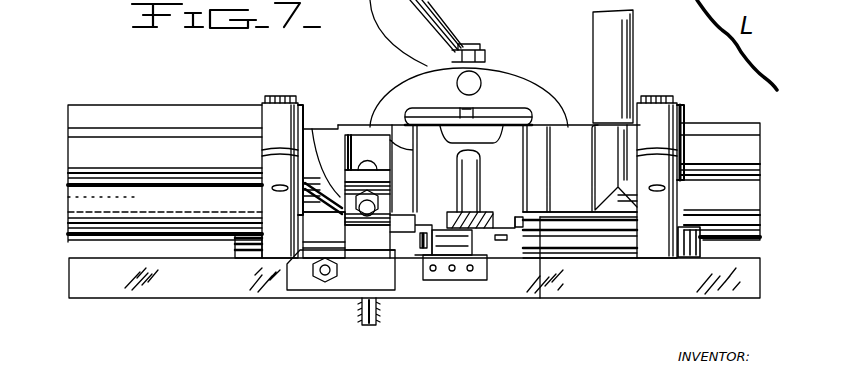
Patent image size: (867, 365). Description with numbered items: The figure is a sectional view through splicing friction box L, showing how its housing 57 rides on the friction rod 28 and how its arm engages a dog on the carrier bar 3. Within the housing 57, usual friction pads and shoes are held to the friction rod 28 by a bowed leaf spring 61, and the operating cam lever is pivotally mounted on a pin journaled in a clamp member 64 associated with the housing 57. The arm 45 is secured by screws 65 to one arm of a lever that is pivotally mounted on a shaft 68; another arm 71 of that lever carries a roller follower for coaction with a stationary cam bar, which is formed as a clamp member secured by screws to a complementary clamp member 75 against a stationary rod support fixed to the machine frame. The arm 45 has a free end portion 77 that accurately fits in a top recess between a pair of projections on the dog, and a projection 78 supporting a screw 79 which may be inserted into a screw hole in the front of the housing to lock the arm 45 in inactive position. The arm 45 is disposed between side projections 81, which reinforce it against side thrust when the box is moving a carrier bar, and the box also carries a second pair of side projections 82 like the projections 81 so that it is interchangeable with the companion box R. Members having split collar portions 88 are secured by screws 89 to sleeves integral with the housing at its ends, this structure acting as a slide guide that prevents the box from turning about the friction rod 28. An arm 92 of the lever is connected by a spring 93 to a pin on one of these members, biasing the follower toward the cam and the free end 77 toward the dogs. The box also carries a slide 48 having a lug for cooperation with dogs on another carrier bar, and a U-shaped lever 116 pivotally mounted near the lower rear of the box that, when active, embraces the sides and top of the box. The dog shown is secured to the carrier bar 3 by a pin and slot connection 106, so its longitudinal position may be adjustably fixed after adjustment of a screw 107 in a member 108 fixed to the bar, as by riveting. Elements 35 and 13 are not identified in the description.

The complementary clamp member 75 is at (100, 110).
The guide strip 35 is at (83, 197).
The friction rod 28 is at (725, 133).
The housing 57 is at (540, 298).
The carrier bar 3 is at (148, 290).
The screws 89 is at (268, 100).
The split collar portions 88 is at (680, 112).
The lever 116 is at (622, 66).
The clamp member 64 is at (550, 95).
The screws 65 is at (472, 80).
The bowed leaf spring 61 is at (491, 121).
The arm 45 is at (328, 148).
The side projections 81 is at (398, 138).
The projection 78 is at (383, 177).
The screw 79 is at (365, 217).
The slide 48 is at (510, 182).
The side projections 82 is at (597, 143).
The shaft 68 is at (238, 242).
The arm 71 is at (310, 224).
The bracket plate 13 is at (295, 274).
The pin and slot connection 106 is at (322, 284).
The spring 93 is at (357, 303).
The arm 92 is at (370, 326).
The free end portion 77 is at (385, 248).
The screw 107 is at (420, 257).
The member 108 is at (463, 276).